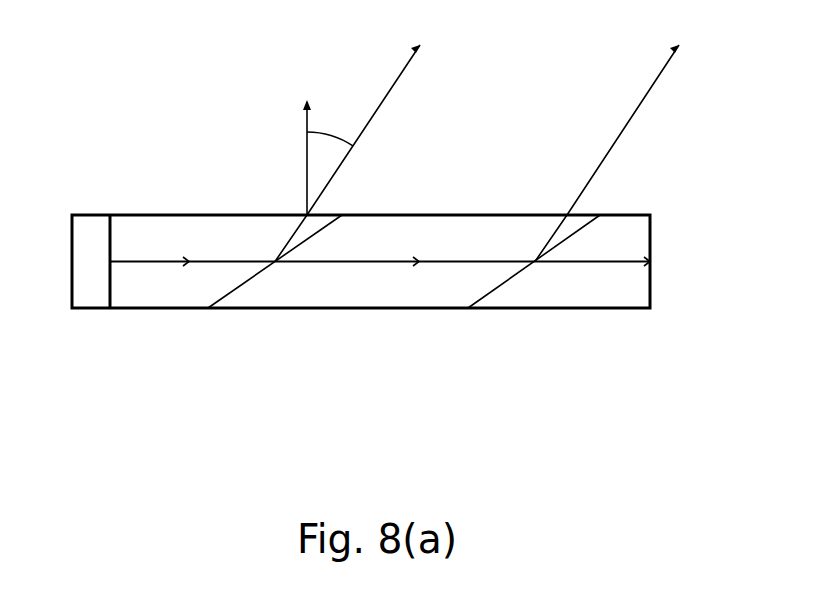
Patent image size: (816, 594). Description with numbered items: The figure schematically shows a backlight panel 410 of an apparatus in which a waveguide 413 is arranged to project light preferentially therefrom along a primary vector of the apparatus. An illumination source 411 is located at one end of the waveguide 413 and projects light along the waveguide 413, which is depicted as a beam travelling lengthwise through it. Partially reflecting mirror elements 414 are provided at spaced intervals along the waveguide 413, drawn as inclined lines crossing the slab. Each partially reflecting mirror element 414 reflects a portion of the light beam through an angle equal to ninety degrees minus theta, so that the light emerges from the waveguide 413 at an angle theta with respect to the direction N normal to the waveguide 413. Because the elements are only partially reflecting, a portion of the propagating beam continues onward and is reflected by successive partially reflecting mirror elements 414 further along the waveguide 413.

The backlight panel 410 is at (387, 237).
The illumination source 411 is at (92, 293).
The waveguide 413 is at (178, 282).
The partially reflecting mirror elements 414 is at (242, 285).